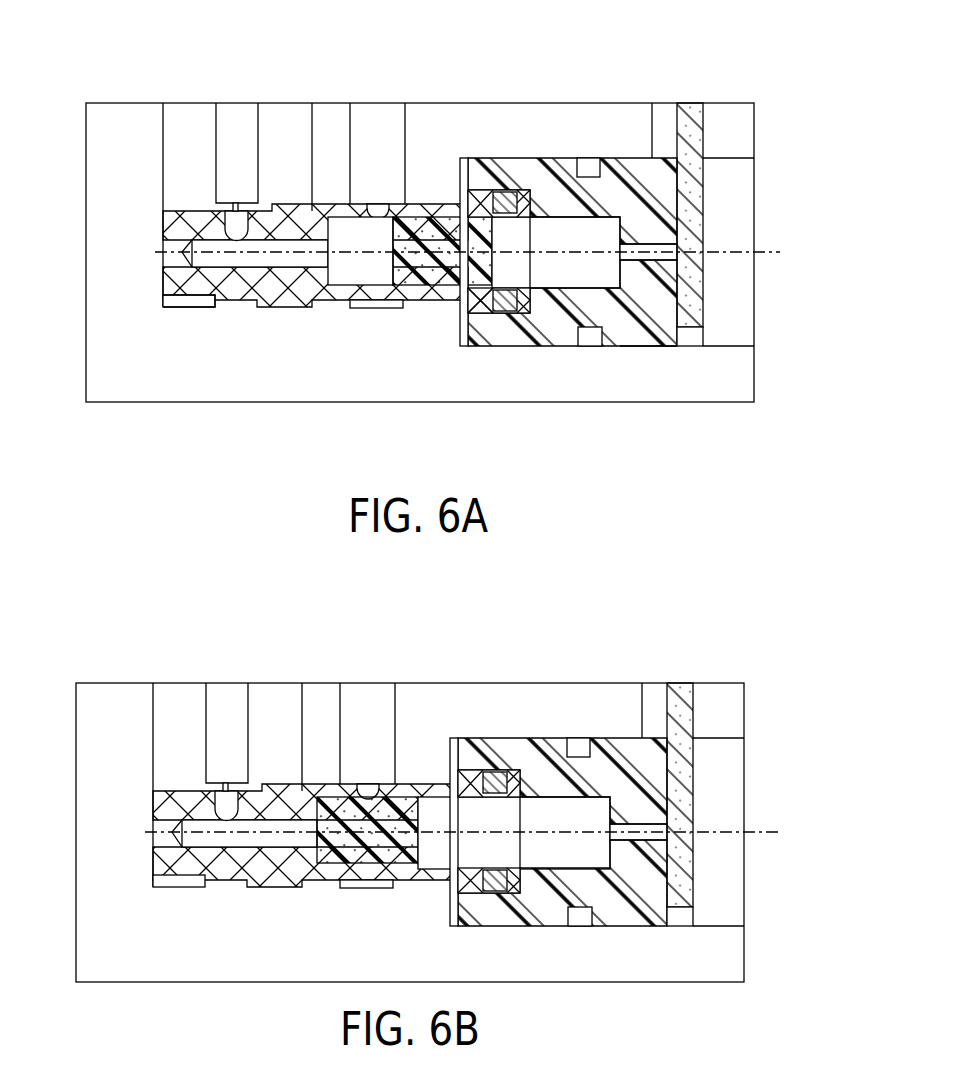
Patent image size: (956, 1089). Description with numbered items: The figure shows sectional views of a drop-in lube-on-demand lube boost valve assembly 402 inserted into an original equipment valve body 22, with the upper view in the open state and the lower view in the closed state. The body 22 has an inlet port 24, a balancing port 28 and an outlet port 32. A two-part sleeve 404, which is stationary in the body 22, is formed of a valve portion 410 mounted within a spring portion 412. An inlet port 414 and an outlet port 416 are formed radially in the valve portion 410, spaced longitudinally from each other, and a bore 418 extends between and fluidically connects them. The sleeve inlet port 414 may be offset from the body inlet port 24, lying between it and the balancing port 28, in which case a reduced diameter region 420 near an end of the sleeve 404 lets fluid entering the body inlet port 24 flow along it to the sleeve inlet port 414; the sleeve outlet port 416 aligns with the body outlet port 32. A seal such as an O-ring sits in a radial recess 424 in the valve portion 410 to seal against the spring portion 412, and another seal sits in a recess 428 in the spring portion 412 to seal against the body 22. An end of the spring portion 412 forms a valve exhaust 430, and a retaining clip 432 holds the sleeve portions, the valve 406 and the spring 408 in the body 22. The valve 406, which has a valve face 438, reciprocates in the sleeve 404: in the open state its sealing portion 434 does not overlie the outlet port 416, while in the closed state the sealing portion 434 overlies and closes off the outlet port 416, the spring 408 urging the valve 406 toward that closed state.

The body 22 is at (113, 112).
The inlet port 24 is at (307, 112).
The balancing port 28 is at (197, 112).
The outlet port 32 is at (370, 112).
The lube boost valve assembly 402 is at (609, 227).
The sleeve 404 is at (568, 180).
The valve 406 is at (455, 298).
The spring 408 is at (575, 255).
The valve portion 410 is at (285, 298).
The spring portion 412 is at (637, 346).
The inlet port 414 is at (236, 210).
The outlet port 416 is at (376, 205).
The bore 418 is at (182, 252).
The reduced diameter region 420 is at (268, 298).
The radial recess 424 is at (505, 190).
The recess 428 is at (596, 160).
The valve exhaust 430 is at (728, 295).
The retaining clip 432 is at (697, 107).
The sealing portion 434 is at (408, 287).
The valve face 438 is at (400, 263).